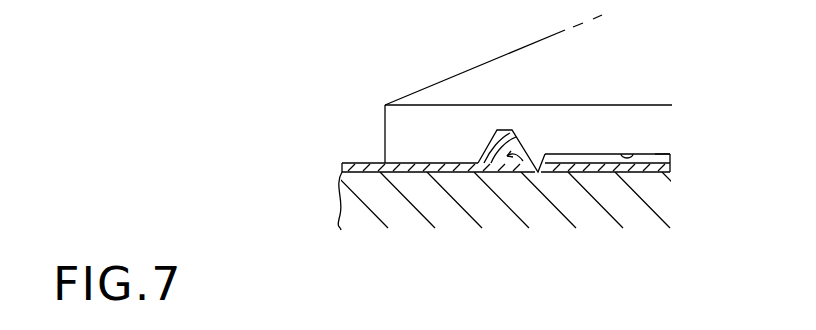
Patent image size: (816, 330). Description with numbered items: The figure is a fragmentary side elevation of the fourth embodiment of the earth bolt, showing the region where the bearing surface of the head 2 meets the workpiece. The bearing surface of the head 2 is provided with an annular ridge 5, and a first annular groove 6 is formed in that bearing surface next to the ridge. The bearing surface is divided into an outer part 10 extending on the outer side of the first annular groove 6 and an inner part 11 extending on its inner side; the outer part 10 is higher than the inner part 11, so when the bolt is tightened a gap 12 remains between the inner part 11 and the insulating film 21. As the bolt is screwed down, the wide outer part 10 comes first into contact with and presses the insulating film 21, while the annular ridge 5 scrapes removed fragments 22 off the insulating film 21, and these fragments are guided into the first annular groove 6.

The head 2 is at (463, 72).
The annular ridge 5 is at (545, 152).
The first annular groove 6 is at (490, 141).
The outer part 10 is at (398, 168).
The inner part 11 is at (637, 153).
The gap 12 is at (662, 158).
The insulating film 21 is at (342, 167).
The removed fragments 22 is at (347, 215).